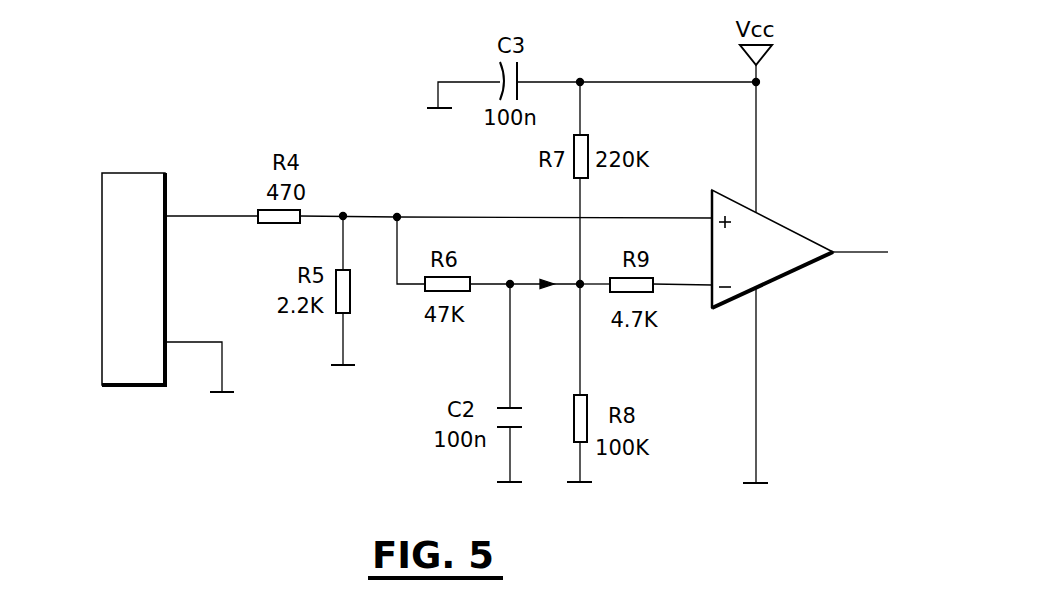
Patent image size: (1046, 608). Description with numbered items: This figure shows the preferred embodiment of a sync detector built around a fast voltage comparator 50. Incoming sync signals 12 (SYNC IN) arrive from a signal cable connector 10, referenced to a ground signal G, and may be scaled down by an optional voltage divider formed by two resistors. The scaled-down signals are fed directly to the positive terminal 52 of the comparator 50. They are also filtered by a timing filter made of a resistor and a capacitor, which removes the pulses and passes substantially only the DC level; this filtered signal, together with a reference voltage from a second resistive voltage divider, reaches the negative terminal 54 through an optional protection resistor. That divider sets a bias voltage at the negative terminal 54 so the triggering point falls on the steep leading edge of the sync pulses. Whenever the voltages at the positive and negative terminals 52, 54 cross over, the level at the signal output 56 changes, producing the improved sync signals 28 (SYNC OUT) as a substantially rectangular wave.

The signal cable connector 10 is at (113, 227).
The incoming sync signals 12 is at (192, 214).
The improved sync signals 28 is at (868, 250).
The fast comparator 50 is at (765, 228).
The positive terminal 52 is at (702, 212).
The negative terminal 54 is at (704, 293).
The signal output 56 is at (834, 258).